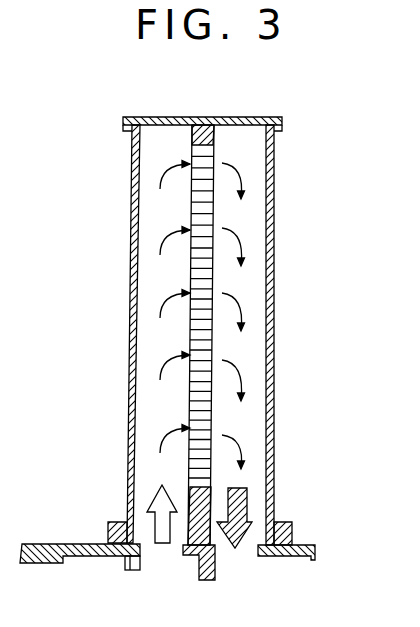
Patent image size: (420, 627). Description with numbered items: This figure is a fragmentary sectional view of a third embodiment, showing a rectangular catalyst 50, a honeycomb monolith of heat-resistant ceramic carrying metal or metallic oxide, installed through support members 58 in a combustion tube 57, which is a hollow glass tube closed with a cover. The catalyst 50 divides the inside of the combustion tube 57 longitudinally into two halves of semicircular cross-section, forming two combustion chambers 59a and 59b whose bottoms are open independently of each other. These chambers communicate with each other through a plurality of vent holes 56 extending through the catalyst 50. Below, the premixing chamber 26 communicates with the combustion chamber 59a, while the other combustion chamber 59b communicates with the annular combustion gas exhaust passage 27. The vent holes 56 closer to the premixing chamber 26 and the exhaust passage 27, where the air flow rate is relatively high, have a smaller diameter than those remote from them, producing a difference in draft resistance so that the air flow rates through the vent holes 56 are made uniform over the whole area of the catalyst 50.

The premixing chamber 26 is at (137, 567).
The combustion gas exhaust passage 27 is at (248, 563).
The rectangular catalyst 50 is at (190, 279).
The vent holes 56 is at (192, 204).
The combustion tube 57 is at (135, 174).
The support members 58 is at (207, 121).
The combustion chamber 59a is at (157, 347).
The combustion chamber 59b is at (247, 348).